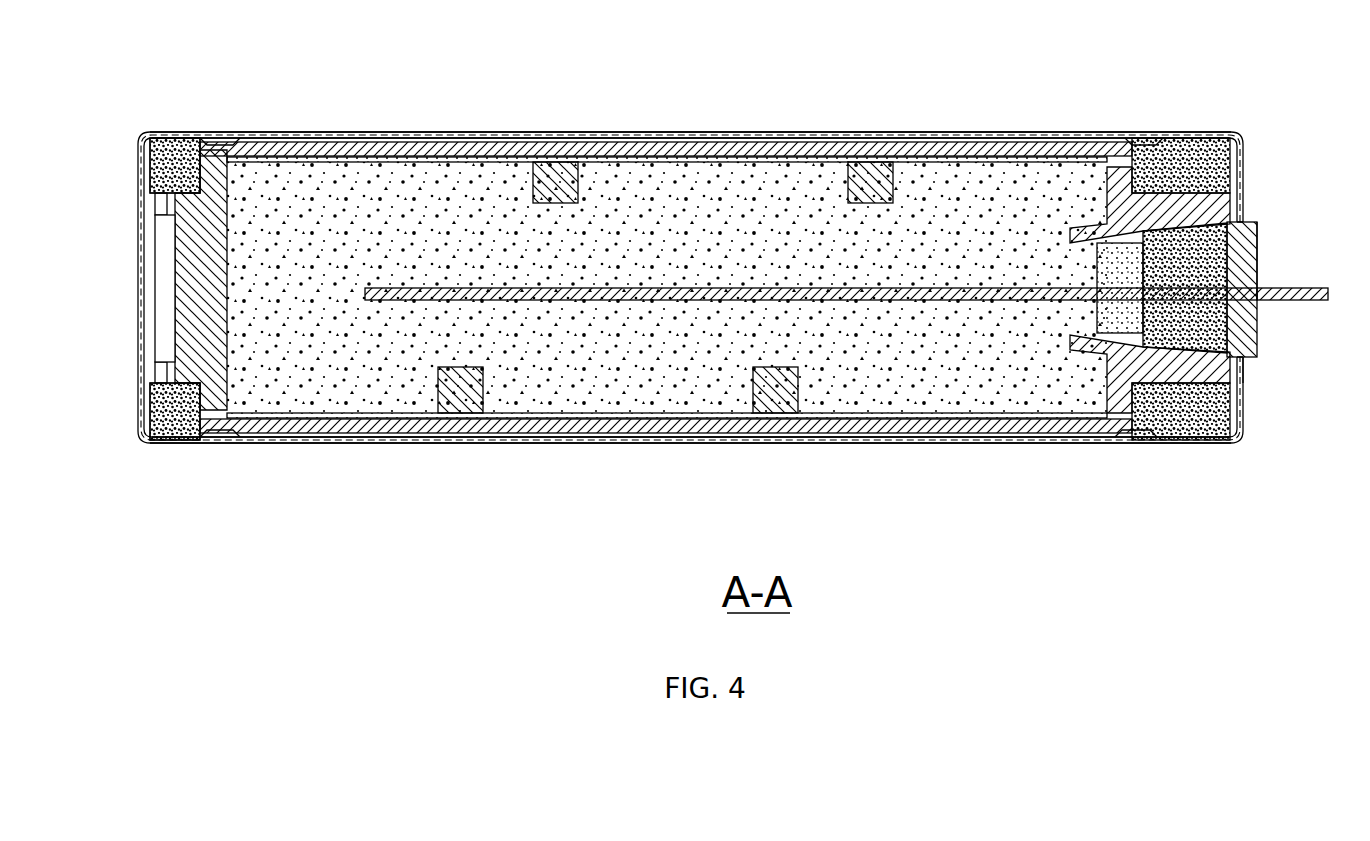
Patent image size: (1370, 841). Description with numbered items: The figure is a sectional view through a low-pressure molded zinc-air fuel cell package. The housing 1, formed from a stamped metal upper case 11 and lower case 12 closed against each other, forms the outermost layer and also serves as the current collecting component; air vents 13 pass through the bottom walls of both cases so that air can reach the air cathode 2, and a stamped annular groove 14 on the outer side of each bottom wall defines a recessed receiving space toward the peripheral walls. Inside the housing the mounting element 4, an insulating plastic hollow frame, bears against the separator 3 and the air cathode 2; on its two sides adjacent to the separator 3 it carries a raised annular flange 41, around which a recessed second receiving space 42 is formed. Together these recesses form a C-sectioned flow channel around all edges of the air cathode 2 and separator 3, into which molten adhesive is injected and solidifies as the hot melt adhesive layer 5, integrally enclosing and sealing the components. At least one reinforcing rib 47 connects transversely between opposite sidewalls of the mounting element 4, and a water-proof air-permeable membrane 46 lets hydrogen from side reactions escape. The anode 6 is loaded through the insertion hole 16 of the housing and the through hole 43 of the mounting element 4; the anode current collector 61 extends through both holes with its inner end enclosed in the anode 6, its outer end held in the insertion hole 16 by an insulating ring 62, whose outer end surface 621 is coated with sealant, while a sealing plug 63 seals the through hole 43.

The housing 1 is at (876, 443).
The upper case 11 is at (709, 443).
The lower case 12 is at (707, 132).
The air vents 13 is at (665, 137).
The annular groove 14 is at (222, 137).
The insertion hole 16 is at (1243, 366).
The air cathode 2 is at (378, 143).
The separator 3 is at (455, 157).
The mounting element 4 is at (185, 243).
The annular flange 41 is at (152, 170).
The second receiving space 42 is at (160, 205).
The through hole 43 is at (1083, 335).
The air-permeable membrane 46 is at (175, 292).
The reinforcing rib 47 is at (560, 162).
The hot melt adhesive layer 5 is at (173, 141).
The anode 6 is at (1283, 222).
The anode current collector 61 is at (648, 300).
The insulating ring 62 is at (1243, 330).
The outer end surface of the insulating ring 621 is at (1257, 265).
The sealing plug 63 is at (1215, 262).